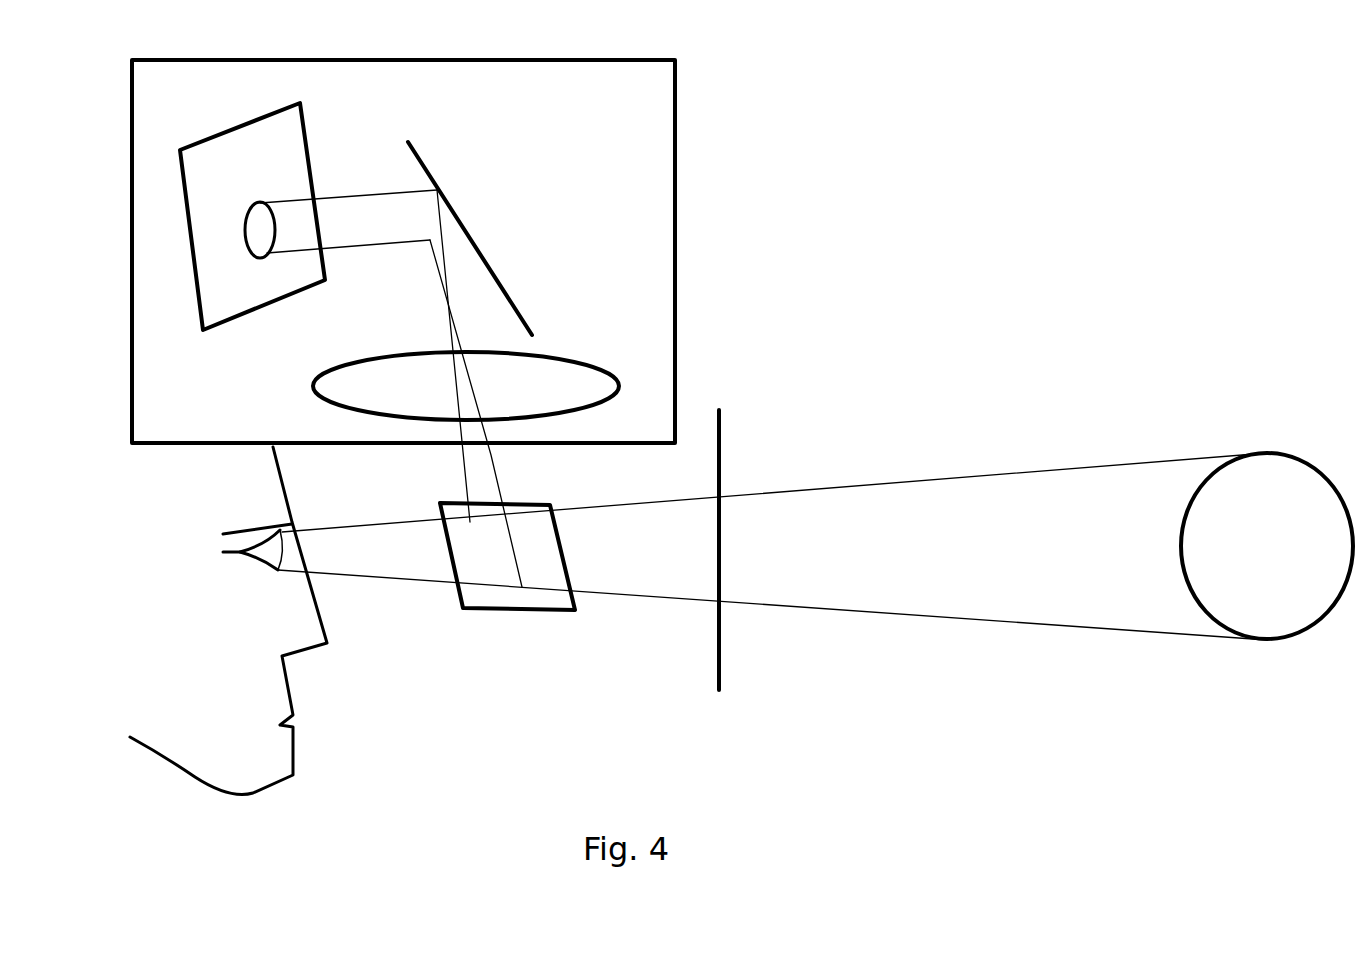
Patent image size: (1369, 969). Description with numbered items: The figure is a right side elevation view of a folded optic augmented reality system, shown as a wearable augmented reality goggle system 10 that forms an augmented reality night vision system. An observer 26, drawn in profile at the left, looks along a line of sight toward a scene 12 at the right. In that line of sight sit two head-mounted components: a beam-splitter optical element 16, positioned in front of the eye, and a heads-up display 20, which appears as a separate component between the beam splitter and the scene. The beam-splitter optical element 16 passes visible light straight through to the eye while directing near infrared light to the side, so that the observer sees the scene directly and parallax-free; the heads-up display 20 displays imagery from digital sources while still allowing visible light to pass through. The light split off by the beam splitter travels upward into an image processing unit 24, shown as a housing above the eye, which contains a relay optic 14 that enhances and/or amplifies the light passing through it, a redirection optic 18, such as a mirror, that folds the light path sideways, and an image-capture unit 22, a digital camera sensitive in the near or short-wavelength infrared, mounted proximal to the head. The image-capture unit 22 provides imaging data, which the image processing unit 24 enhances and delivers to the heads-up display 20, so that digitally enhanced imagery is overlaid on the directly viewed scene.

The wearable augmented reality goggle system 10 is at (786, 160).
The scene 12 is at (1267, 546).
The relay optic 14 is at (466, 386).
The beam-splitter optical element 16 is at (507, 556).
The redirection optic 18 is at (430, 163).
The heads-up display 20 is at (723, 518).
The image-capture unit 22 is at (293, 153).
The image processing unit 24 is at (663, 188).
The observer 26 is at (914, 621).